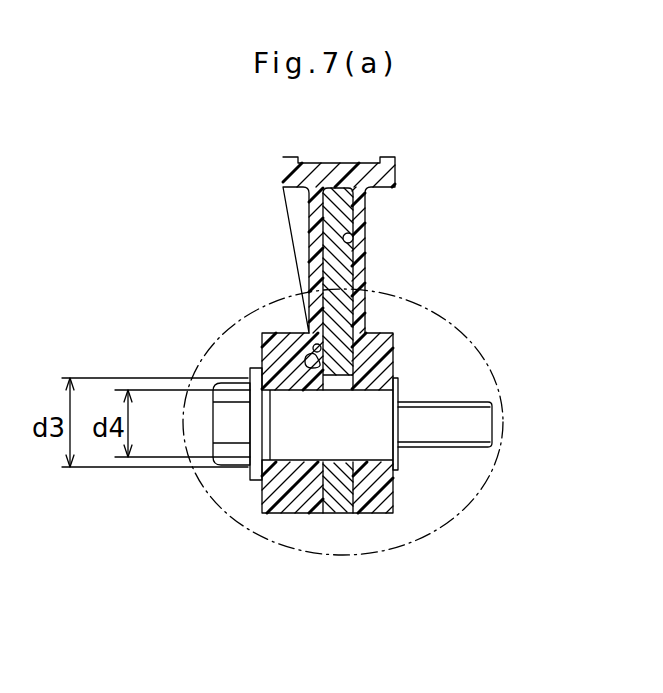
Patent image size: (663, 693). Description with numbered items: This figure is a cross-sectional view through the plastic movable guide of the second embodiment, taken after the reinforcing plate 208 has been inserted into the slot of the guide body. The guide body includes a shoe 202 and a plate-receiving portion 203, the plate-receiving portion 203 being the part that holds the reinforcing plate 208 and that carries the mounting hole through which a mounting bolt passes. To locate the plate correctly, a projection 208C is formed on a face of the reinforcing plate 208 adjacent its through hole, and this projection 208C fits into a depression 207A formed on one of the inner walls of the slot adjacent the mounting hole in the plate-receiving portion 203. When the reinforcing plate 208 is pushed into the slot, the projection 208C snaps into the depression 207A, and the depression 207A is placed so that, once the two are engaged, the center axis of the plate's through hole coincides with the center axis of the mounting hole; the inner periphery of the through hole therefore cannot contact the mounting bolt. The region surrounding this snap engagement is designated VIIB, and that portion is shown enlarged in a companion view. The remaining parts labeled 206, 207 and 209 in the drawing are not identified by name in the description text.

The shoe 202 is at (353, 167).
The plate-receiving portion 203 is at (322, 230).
The holder block 206 is at (393, 358).
The hole 207 is at (353, 237).
The depression 207A is at (307, 349).
The reinforcing plate 208 is at (335, 495).
The projection 208C is at (394, 368).
The nut 209 is at (227, 381).
The portion VIIB is at (455, 520).